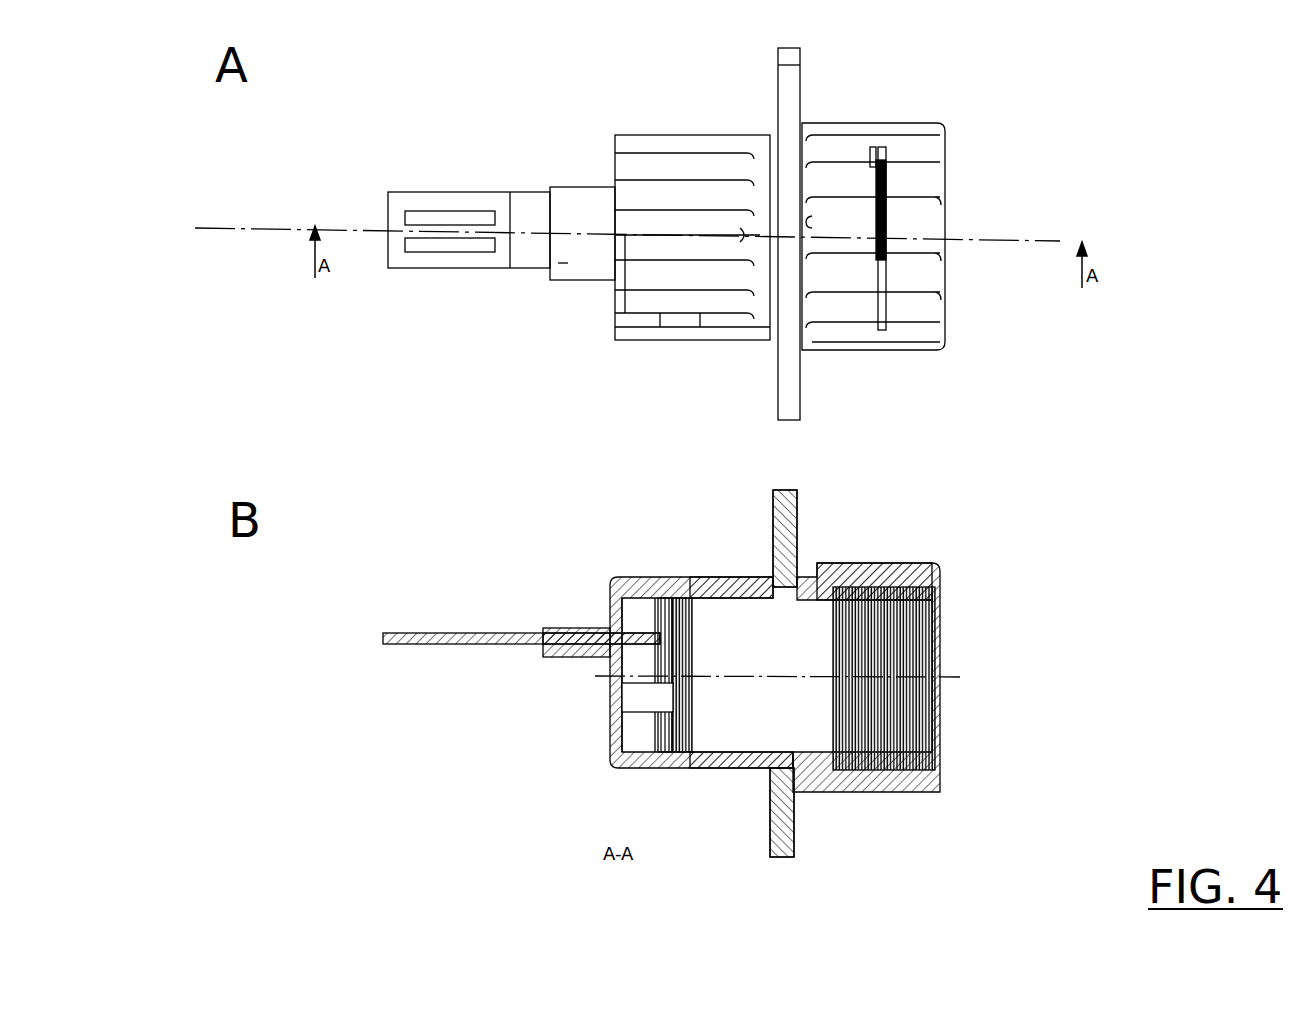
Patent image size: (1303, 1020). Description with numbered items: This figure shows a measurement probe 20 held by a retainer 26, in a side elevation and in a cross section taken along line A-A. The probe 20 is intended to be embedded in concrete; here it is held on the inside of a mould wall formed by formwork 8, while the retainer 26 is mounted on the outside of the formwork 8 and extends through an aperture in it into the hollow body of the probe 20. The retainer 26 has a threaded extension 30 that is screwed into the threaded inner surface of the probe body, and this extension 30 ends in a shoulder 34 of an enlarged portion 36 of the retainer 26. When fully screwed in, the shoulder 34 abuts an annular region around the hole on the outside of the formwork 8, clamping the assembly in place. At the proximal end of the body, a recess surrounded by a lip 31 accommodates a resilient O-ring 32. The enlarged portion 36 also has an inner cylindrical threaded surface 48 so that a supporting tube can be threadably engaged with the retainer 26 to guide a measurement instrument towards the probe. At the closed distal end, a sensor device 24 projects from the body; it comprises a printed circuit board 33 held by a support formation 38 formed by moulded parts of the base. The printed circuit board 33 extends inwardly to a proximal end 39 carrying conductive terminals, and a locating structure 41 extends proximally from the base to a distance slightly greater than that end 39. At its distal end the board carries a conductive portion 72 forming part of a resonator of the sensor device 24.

The formwork 8 is at (776, 108).
The measurement probe 20 is at (588, 297).
The sensor device 24 is at (420, 190).
The retainer 26 is at (928, 124).
The extension 30 is at (715, 758).
The lip 31 is at (760, 568).
The O-ring 32 is at (763, 775).
The printed circuit board 33 is at (530, 262).
The shoulder 34 is at (798, 510).
The enlarged portion 36 is at (888, 126).
The support formation 38 is at (585, 200).
The proximal end 39 is at (650, 635).
The locating structure 41 is at (638, 697).
The inner cylindrical threaded surface 48 is at (937, 668).
The conductive portion 72 is at (468, 203).